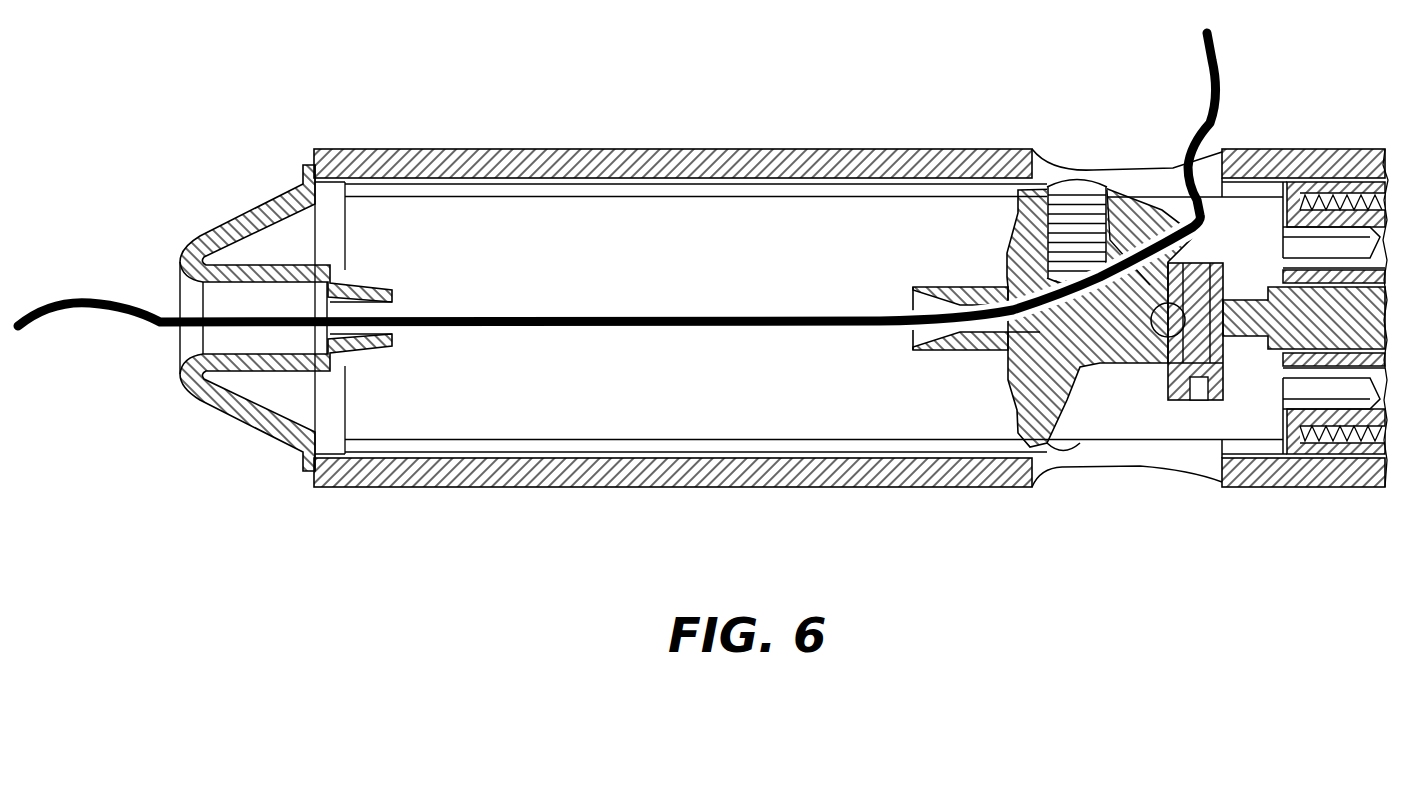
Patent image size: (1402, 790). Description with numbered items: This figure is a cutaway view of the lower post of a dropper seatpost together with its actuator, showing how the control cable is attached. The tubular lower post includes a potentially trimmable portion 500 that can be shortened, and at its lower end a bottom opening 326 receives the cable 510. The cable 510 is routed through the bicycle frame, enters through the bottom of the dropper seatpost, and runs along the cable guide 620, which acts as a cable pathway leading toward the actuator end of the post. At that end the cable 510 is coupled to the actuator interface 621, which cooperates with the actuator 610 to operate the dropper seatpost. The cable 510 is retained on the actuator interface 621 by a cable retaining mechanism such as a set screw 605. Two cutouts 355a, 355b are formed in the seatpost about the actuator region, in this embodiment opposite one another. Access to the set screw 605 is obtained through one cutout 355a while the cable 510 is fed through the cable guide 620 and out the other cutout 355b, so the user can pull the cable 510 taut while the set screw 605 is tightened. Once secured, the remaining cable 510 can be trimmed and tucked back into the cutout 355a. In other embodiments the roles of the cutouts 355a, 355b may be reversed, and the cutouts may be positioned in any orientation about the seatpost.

The trimmable portion 500 is at (1030, 536).
The bottom opening 326 is at (180, 252).
The cable 510 is at (110, 318).
The cable guide 620 is at (928, 303).
The actuator interface 621 is at (1100, 367).
The set screw 605 is at (1195, 400).
The actuator 610 is at (1240, 285).
The cutout 355a is at (1054, 160).
The cutout 355b is at (1047, 478).